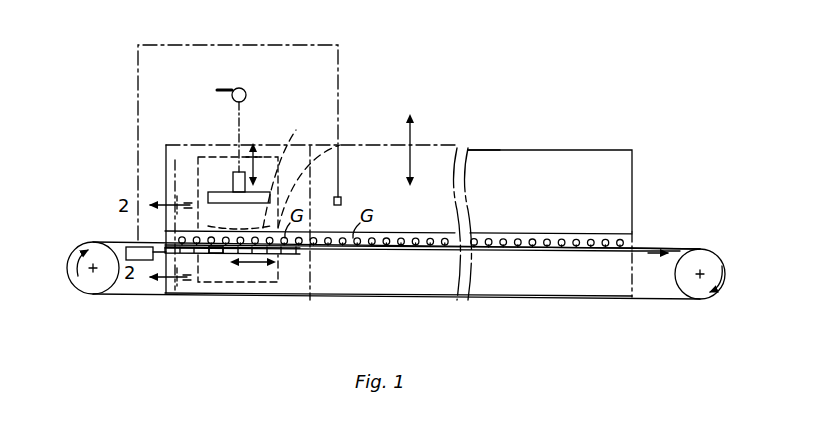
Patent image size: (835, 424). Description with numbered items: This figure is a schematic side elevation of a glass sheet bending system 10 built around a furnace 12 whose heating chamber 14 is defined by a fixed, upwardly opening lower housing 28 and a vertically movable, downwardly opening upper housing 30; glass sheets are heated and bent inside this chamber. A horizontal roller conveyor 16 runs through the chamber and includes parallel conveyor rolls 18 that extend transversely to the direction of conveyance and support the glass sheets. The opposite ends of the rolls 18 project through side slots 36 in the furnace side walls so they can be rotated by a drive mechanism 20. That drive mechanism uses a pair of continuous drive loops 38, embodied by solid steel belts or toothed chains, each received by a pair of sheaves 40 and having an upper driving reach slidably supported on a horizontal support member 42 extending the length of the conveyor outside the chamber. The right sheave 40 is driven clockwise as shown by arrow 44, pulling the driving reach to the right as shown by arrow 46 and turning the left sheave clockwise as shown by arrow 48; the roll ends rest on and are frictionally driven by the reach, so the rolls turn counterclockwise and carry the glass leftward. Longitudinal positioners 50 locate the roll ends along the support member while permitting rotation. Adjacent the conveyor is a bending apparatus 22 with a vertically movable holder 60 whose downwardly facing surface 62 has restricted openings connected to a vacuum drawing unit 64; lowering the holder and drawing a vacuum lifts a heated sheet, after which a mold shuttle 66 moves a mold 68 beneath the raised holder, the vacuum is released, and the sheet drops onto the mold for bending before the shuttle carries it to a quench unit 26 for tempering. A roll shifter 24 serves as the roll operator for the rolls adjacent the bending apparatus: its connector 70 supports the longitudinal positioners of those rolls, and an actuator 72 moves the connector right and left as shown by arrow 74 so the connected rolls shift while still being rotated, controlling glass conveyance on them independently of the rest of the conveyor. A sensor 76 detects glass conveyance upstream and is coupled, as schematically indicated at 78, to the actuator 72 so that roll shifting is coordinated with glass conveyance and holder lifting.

The glass sheet bending system 10 is at (558, 92).
The furnace 12 is at (438, 146).
The heating chamber 14 is at (558, 160).
The horizontal roller conveyor 16 is at (480, 243).
The conveyor rolls 18 is at (404, 244).
The drive mechanism 20 is at (680, 243).
The bending apparatus 22 is at (209, 171).
The roll shifter 24 is at (208, 268).
The quench unit 26 is at (285, 160).
The lower housing 28 is at (506, 297).
The upper housing 30 is at (500, 148).
The side slots 36 is at (517, 248).
The continuous drive loops 38 is at (673, 230).
The sheaves 40 is at (88, 244).
The horizontal support member 42 is at (558, 250).
The arrow 44 is at (725, 284).
The arrow 46 is at (641, 254).
The arrow 48 is at (78, 265).
The longitudinal positioners 50 is at (446, 250).
The holder 60 is at (235, 172).
The downwardly facing surface 62 is at (208, 202).
The vacuum drawing unit 64 is at (246, 90).
The mold shuttle 66 is at (339, 146).
The mold 68 is at (285, 143).
The connector 70 is at (221, 256).
The actuator 72 is at (130, 248).
The arrow 74 is at (255, 266).
The sensor 76 is at (340, 197).
The coupling 78 is at (250, 43).